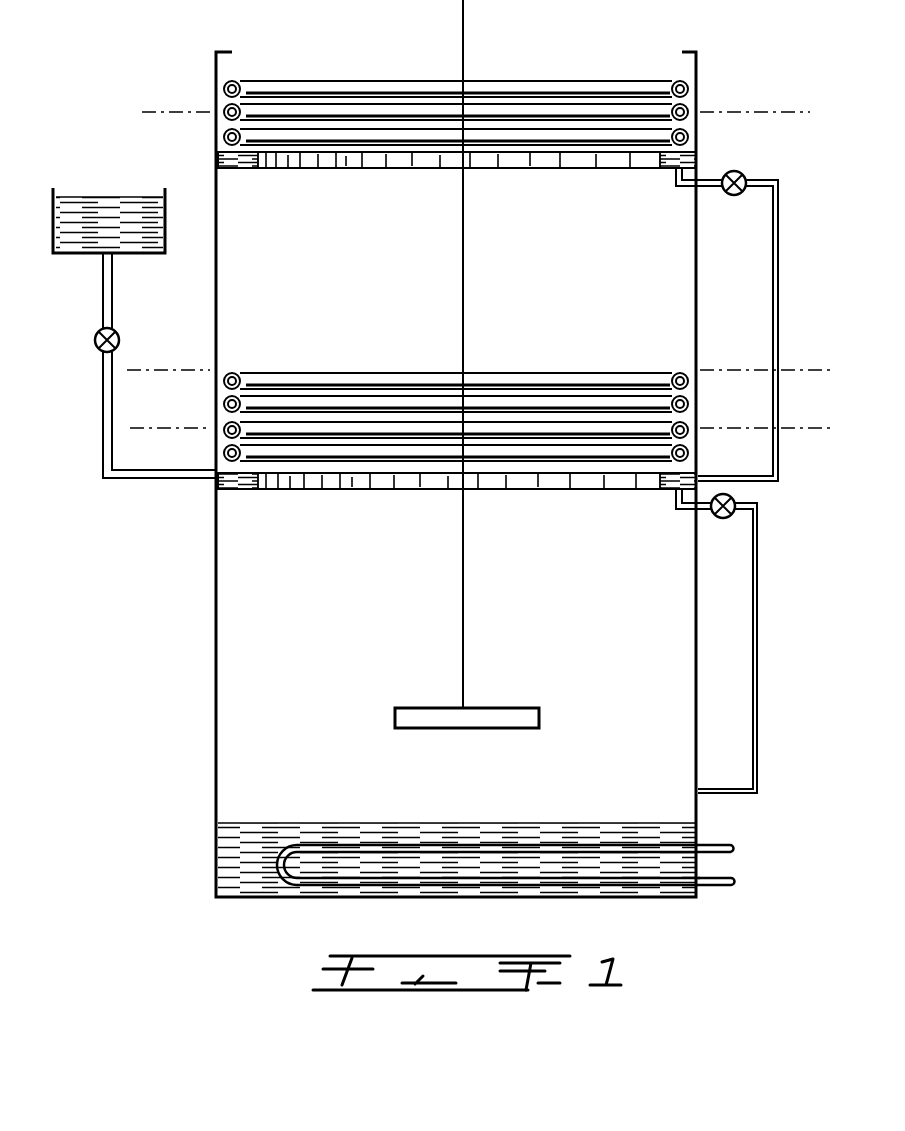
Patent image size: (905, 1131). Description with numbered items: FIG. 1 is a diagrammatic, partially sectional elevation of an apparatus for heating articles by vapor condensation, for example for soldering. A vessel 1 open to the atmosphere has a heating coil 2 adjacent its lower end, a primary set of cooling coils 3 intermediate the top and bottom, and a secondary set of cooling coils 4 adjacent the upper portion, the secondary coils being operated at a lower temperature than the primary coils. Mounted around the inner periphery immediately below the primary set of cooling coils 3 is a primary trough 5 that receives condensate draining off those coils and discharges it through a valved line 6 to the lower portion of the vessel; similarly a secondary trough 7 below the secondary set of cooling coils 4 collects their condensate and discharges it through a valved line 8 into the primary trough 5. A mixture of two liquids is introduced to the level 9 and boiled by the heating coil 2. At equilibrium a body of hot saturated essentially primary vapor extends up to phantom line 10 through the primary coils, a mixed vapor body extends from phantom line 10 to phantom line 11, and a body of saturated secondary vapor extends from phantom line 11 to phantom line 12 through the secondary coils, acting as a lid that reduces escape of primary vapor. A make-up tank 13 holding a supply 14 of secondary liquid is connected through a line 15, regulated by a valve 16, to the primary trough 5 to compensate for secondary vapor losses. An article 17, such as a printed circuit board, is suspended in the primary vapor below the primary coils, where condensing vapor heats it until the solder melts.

The vessel 1 is at (216, 542).
The heating coil 2 is at (716, 886).
The primary set of cooling coils 3 is at (222, 458).
The secondary set of cooling coils 4 is at (225, 110).
The primary trough 5 is at (238, 492).
The valved line 6 is at (676, 508).
The secondary trough 7 is at (238, 170).
The valved line 8 is at (676, 190).
The liquid level 9 is at (578, 823).
The phantom line 10 is at (808, 428).
The phantom line 11 is at (812, 372).
The phantom line 12 is at (758, 112).
The make-up tank 13 is at (165, 205).
The supply of makeup secondary liquid 14 is at (86, 196).
The line 15 is at (102, 410).
The valve 16 is at (97, 330).
The article 17 is at (523, 706).